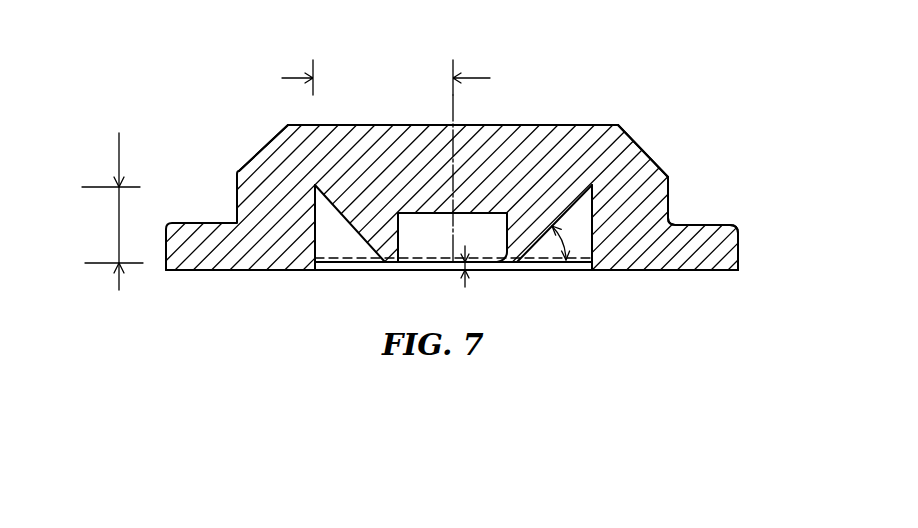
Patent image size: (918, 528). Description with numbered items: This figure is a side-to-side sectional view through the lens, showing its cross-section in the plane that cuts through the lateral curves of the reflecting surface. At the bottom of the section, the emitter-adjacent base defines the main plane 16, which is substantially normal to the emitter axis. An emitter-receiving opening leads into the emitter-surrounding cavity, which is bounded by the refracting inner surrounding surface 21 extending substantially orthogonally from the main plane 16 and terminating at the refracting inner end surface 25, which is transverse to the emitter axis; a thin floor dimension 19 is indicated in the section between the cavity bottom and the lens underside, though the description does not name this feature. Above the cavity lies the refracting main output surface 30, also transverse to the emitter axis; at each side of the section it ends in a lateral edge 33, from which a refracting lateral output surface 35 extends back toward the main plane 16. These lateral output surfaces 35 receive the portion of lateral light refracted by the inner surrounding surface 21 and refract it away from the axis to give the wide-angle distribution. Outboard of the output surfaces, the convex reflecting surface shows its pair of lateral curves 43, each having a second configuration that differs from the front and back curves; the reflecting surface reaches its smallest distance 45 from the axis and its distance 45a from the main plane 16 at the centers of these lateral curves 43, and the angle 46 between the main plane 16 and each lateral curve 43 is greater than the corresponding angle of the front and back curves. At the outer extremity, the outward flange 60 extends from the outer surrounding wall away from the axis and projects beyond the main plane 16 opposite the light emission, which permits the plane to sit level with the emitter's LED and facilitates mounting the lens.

The refracting main output surface 30 is at (522, 125).
The lateral edge 33 is at (620, 125).
The refracting lateral output surface 35 is at (265, 147).
The outward flange 60 is at (725, 247).
The main plane 16 is at (502, 271).
The refracting inner surrounding surface 21 is at (490, 263).
The refracting inner end surface 25 is at (450, 213).
The lateral curve 43 is at (410, 180).
The angle 46 is at (563, 241).
The floor thickness 19 is at (468, 266).
The smallest distance 45 is at (386, 69).
The distance 45a is at (101, 211).